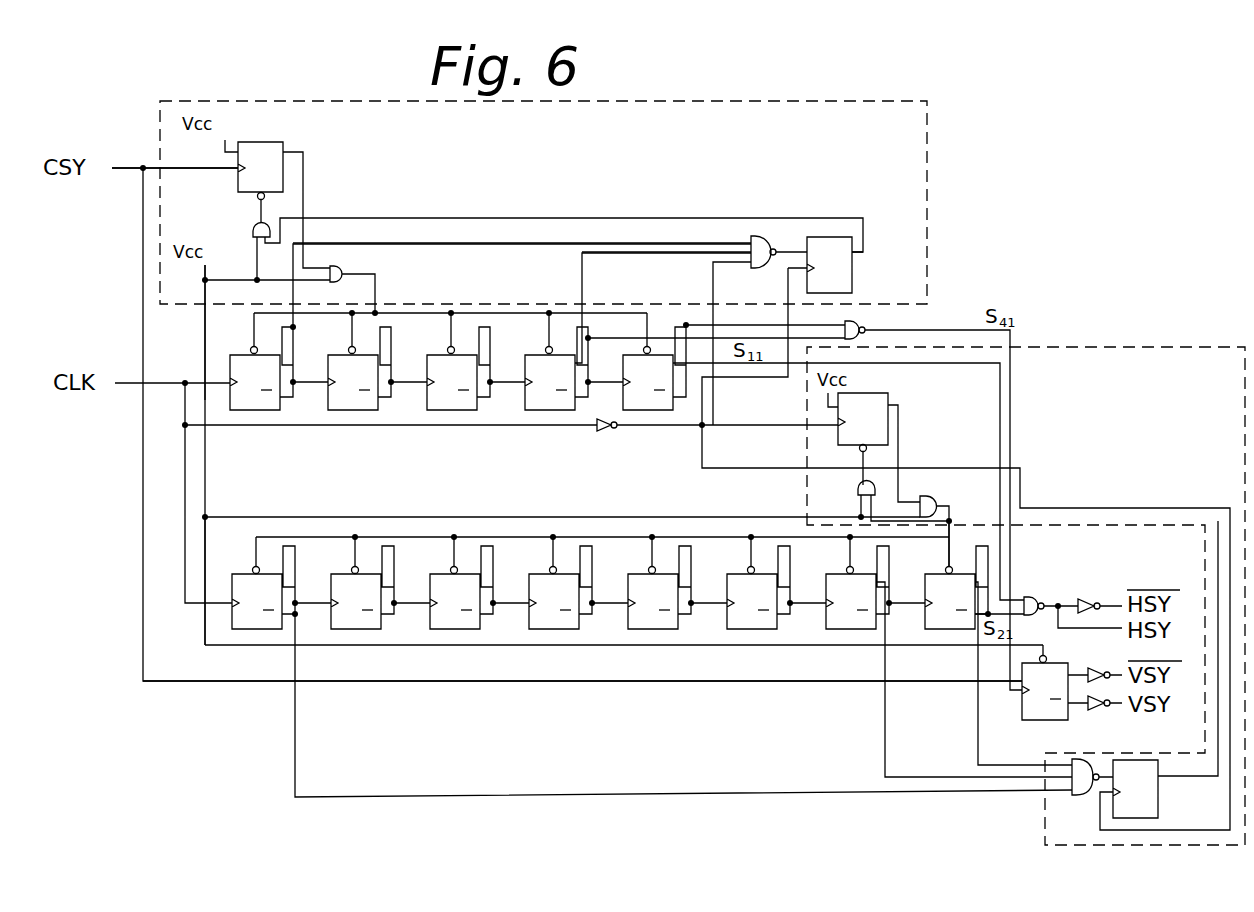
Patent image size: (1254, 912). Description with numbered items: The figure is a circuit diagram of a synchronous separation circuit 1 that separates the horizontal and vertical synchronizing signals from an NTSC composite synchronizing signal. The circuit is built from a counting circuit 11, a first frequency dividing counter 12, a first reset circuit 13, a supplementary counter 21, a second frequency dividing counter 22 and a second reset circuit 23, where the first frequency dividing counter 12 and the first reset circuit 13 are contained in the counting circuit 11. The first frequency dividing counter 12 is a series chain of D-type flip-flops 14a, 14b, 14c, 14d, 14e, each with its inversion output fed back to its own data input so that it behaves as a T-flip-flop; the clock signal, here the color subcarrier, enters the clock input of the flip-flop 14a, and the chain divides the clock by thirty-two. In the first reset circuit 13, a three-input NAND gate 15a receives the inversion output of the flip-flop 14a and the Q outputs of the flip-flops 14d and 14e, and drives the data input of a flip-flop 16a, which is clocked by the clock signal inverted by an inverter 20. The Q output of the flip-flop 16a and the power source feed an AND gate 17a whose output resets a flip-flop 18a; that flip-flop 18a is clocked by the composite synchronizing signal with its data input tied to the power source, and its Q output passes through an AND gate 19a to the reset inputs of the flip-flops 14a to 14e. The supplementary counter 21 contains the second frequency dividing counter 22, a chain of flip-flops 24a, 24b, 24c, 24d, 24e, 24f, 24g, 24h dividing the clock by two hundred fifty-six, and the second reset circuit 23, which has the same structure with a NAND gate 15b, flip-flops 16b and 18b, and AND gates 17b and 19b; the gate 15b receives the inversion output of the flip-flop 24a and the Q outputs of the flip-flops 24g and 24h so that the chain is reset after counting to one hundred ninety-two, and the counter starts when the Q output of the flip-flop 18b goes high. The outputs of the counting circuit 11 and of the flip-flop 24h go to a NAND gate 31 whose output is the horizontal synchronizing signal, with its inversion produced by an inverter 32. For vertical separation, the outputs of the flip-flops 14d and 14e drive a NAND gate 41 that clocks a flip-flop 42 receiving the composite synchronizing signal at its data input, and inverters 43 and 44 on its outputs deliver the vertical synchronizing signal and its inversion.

The synchronous separation circuit 1 is at (960, 158).
The counting circuit 11 is at (118, 263).
The first frequency dividing counter 12 is at (198, 344).
The first reset circuit 13 is at (932, 106).
The D-type flip-flop circuit 14a is at (257, 410).
The D-type flip-flop circuit 14b is at (355, 410).
The D-type flip-flop circuit 14c is at (454, 410).
The D-type flip-flop circuit 14d is at (552, 410).
The D-type flip-flop circuit 14e is at (650, 410).
The NAND gate 15a is at (765, 236).
The NAND gate 15b is at (1060, 797).
The D-type flip-flop circuit 16a is at (852, 282).
The D-type flip-flop circuit 16b is at (1158, 808).
The AND gate 17a is at (252, 229).
The AND gate 17b is at (856, 492).
The D-type flip-flop circuit 18a is at (236, 187).
The D-type flip-flop circuit 18b is at (888, 397).
The AND gate 19a is at (345, 266).
The AND gate 19b is at (930, 494).
The inverter 20 is at (605, 432).
The supplementary counter 21 is at (660, 705).
The second frequency dividing counter 22 is at (200, 636).
The second reset circuit 23 is at (1150, 345).
The D-type flip-flop circuit 24a is at (257, 630).
The D-type flip-flop circuit 24b is at (356, 630).
The D-type flip-flop circuit 24c is at (455, 630).
The D-type flip-flop circuit 24d is at (554, 630).
The D-type flip-flop circuit 24e is at (653, 630).
The D-type flip-flop circuit 24f is at (752, 630).
The D-type flip-flop circuit 24g is at (851, 630).
The D-type flip-flop circuit 24h is at (950, 630).
The NAND gate 31 is at (1032, 594).
The inverter 32 is at (1090, 596).
The NAND gate 41 is at (858, 320).
The D-type flip-flop circuit 42 is at (1025, 722).
The inverter 43 is at (1103, 662).
The inverter 44 is at (1100, 712).